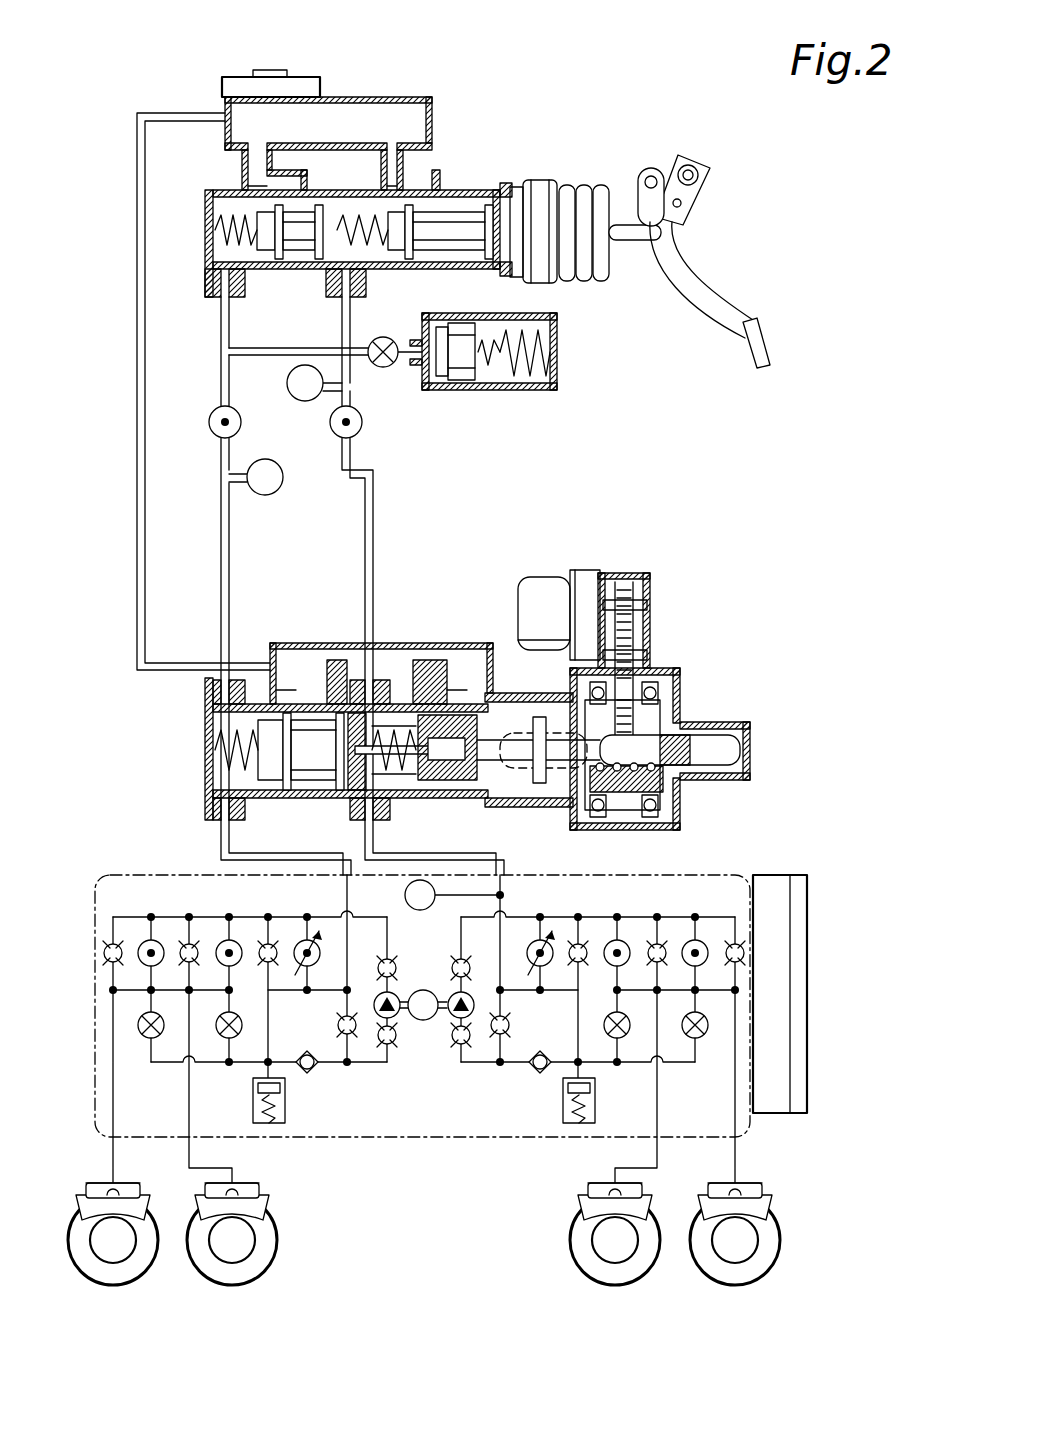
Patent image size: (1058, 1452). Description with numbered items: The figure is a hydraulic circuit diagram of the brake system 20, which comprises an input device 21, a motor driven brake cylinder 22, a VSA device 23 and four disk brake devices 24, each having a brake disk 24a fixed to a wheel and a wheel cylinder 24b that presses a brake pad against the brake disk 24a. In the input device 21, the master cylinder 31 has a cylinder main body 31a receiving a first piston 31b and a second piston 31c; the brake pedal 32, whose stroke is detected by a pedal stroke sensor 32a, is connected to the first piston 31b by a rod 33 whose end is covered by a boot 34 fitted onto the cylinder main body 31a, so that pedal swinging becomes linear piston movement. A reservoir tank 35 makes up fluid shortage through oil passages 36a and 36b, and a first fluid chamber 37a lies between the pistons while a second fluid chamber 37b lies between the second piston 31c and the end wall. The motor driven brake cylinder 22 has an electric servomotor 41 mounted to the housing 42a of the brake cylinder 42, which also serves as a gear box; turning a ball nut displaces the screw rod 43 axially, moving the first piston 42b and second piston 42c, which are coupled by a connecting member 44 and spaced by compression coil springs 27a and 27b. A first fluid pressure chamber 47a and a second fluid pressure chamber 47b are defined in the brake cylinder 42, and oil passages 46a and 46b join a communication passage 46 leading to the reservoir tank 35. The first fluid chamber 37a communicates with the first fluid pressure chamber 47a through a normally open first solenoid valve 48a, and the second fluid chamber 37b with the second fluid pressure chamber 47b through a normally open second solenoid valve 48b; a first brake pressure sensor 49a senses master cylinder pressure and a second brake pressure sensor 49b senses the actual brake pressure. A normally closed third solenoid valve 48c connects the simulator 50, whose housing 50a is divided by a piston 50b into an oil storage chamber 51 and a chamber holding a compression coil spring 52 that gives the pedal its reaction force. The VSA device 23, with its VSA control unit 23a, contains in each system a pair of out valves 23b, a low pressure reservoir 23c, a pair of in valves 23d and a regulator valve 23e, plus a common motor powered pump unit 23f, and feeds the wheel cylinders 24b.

The brake system 20 is at (132, 42).
The input device 21 is at (648, 391).
The motor driven brake cylinder 22 is at (720, 652).
The VSA device 23 is at (168, 875).
The VSA control unit 23a is at (773, 875).
The out valve 23b is at (697, 1039).
The low pressure reservoir 23c is at (563, 1092).
The in valve 23d is at (700, 941).
The regulator valve 23e is at (553, 964).
The motor powered pump unit 23f is at (423, 1021).
The disk brake device 24 is at (736, 1296).
The brake disk 24a is at (780, 1226).
The wheel cylinder 24b is at (753, 1182).
The compression coil spring 27a is at (398, 772).
The compression coil spring 27b is at (228, 768).
The master cylinder 31 is at (488, 190).
The cylinder main body 31a is at (473, 190).
The first piston 31b is at (452, 215).
The second piston 31c is at (296, 250).
The brake pedal 32 is at (700, 273).
The pedal stroke sensor 32a is at (697, 160).
The rod 33 is at (614, 225).
The boot 34 is at (575, 188).
The reservoir tank 35 is at (337, 97).
The oil passage 36a is at (392, 186).
The oil passage 36b is at (257, 186).
The first fluid chamber 37a is at (362, 226).
The second fluid chamber 37b is at (232, 205).
The electric servomotor 41 is at (545, 590).
The brake cylinder 42 is at (696, 711).
The housing 42a is at (652, 673).
The first piston 42b is at (492, 796).
The second piston 42c is at (313, 780).
The screw rod 43 is at (712, 763).
The connecting member 44 is at (396, 738).
The communication passage 46 is at (137, 278).
The oil passage 46a is at (458, 692).
The oil passage 46b is at (297, 692).
The first fluid pressure chamber 47a is at (412, 727).
The second fluid pressure chamber 47b is at (225, 722).
The first solenoid valve 48a is at (358, 432).
The second solenoid valve 48b is at (210, 432).
The third solenoid valve 48c is at (385, 337).
The first brake pressure sensor 49a is at (287, 383).
The second brake pressure sensor 49b is at (258, 495).
The simulator 50 is at (557, 348).
The housing 50a is at (548, 318).
The piston 50b is at (463, 336).
The oil storage chamber 51 is at (440, 382).
The compression coil spring 52 is at (525, 390).